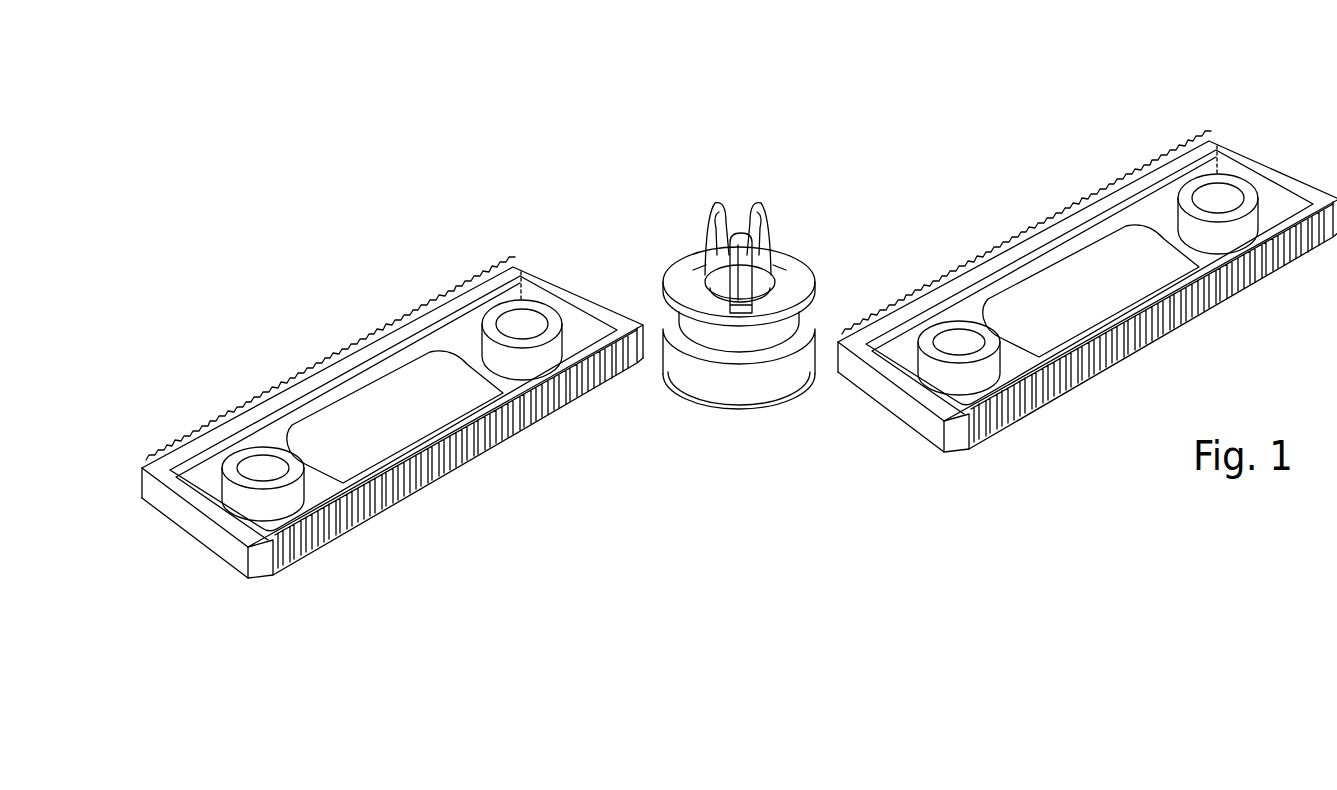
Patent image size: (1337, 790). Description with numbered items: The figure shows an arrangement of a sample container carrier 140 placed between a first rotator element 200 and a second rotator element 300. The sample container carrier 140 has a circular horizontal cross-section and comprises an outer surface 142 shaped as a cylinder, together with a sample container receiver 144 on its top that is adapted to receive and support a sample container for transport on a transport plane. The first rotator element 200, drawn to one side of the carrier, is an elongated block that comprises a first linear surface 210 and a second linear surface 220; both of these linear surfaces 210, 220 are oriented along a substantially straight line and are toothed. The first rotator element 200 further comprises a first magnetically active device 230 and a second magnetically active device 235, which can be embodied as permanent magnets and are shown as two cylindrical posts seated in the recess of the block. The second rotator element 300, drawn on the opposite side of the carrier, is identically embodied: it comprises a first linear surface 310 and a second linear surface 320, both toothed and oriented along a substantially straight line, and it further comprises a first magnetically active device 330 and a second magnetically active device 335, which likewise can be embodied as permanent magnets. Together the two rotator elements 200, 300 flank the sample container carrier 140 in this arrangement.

The sample container carrier 140 is at (778, 309).
The outer surface 142 is at (768, 383).
The sample container receiver 144 is at (770, 253).
The first rotator element 200 is at (374, 426).
The first linear surface 210 is at (370, 522).
The second linear surface 220 is at (338, 346).
The first magnetically active device 230 is at (262, 470).
The second magnetically active device 235 is at (510, 322).
The second rotator element 300 is at (1087, 324).
The first linear surface 310 is at (1055, 215).
The second linear surface 320 is at (1085, 362).
The first magnetically active device 330 is at (957, 343).
The second magnetically active device 335 is at (1212, 195).